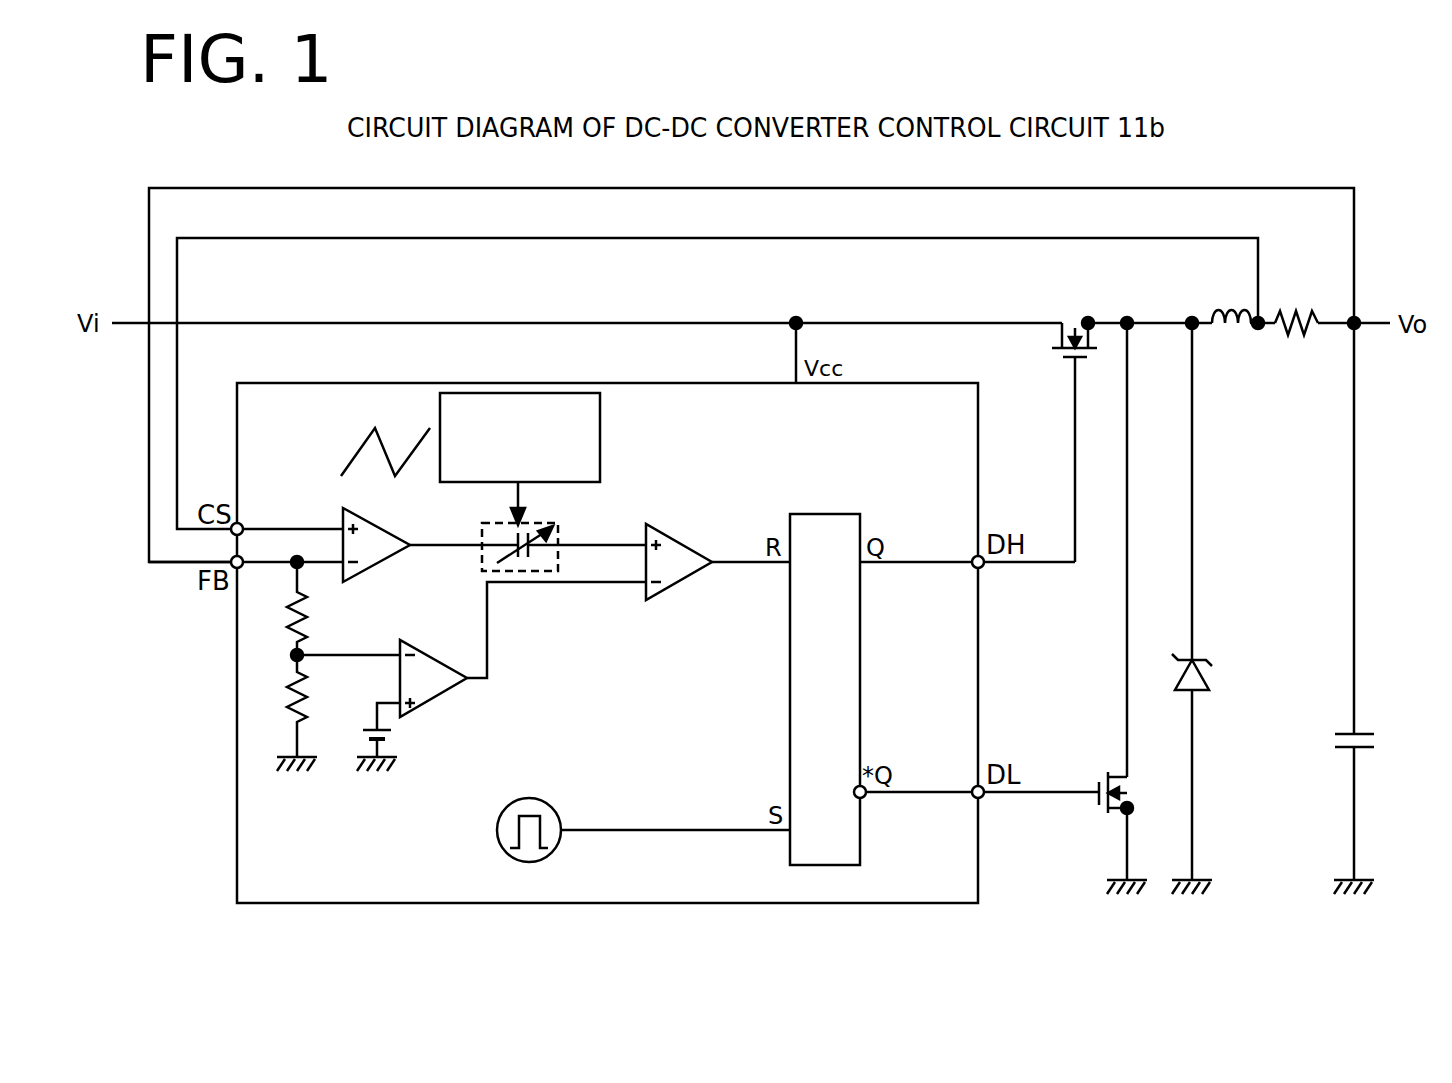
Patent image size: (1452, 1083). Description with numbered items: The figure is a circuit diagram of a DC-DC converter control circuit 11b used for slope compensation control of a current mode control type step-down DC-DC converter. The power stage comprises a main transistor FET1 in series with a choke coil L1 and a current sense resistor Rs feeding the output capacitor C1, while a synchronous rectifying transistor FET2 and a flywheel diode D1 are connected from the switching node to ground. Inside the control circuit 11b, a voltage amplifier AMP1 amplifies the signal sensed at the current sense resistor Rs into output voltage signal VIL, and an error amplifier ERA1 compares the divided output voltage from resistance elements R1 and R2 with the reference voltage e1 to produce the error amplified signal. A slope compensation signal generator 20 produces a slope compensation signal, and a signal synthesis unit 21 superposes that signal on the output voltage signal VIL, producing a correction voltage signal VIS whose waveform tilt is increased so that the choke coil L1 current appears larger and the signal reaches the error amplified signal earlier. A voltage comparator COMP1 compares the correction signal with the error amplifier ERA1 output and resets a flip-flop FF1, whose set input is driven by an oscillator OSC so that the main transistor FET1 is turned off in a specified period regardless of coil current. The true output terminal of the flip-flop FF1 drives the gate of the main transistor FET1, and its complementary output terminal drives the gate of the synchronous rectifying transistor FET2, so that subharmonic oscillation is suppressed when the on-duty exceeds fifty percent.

The DC-DC converter control circuit 11b is at (899, 383).
The slope compensation signal generator 20 is at (600, 445).
The signal synthesis unit 21 is at (549, 520).
The voltage amplifier AMP1 is at (378, 530).
The error amplifier ERA1 is at (437, 667).
The voltage comparator COMP1 is at (683, 550).
The flip-flop FF1 is at (825, 689).
The oscillator OSC is at (556, 803).
The main transistor FET1 is at (1072, 421).
The synchronous rectifying transistor FET2 is at (1072, 800).
The choke coil L1 is at (1231, 300).
The current sense resistor Rs is at (1296, 308).
The capacitor C1 is at (1334, 737).
The flywheel diode D1 is at (1205, 680).
The resistance element R1 is at (277, 608).
The resistance element R2 is at (277, 706).
The reference voltage e1 is at (392, 742).